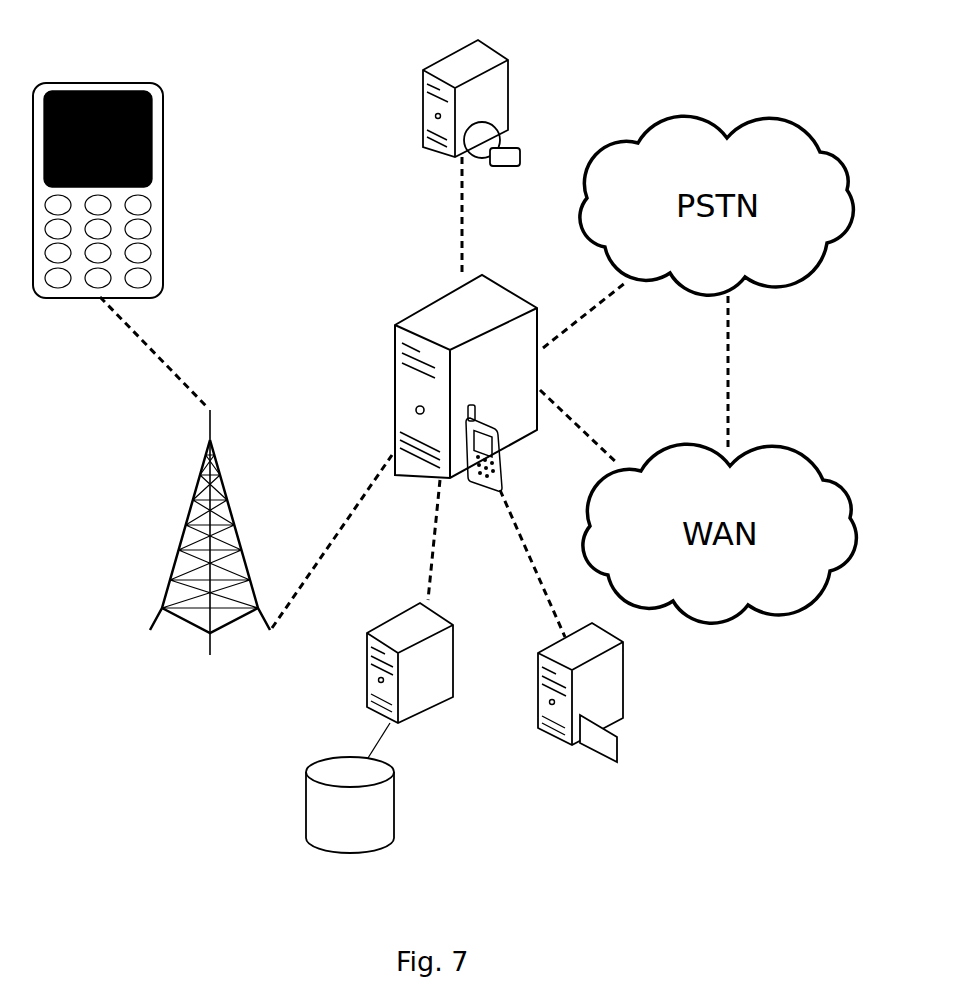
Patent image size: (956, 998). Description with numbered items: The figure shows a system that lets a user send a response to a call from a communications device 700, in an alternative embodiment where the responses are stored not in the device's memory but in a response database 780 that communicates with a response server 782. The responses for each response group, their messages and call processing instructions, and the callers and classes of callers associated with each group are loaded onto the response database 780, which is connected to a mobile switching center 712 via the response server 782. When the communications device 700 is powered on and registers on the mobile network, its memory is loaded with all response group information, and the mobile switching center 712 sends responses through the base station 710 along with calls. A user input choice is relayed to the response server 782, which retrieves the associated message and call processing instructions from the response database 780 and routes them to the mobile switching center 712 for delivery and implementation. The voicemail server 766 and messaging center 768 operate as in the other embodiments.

The communications device 700 is at (162, 158).
The base station 710 is at (182, 552).
The mobile switching center 712 is at (408, 320).
The voicemail server 766 is at (510, 70).
The messaging center 768 is at (617, 722).
The response database 780 is at (312, 843).
The response server 782 is at (365, 675).